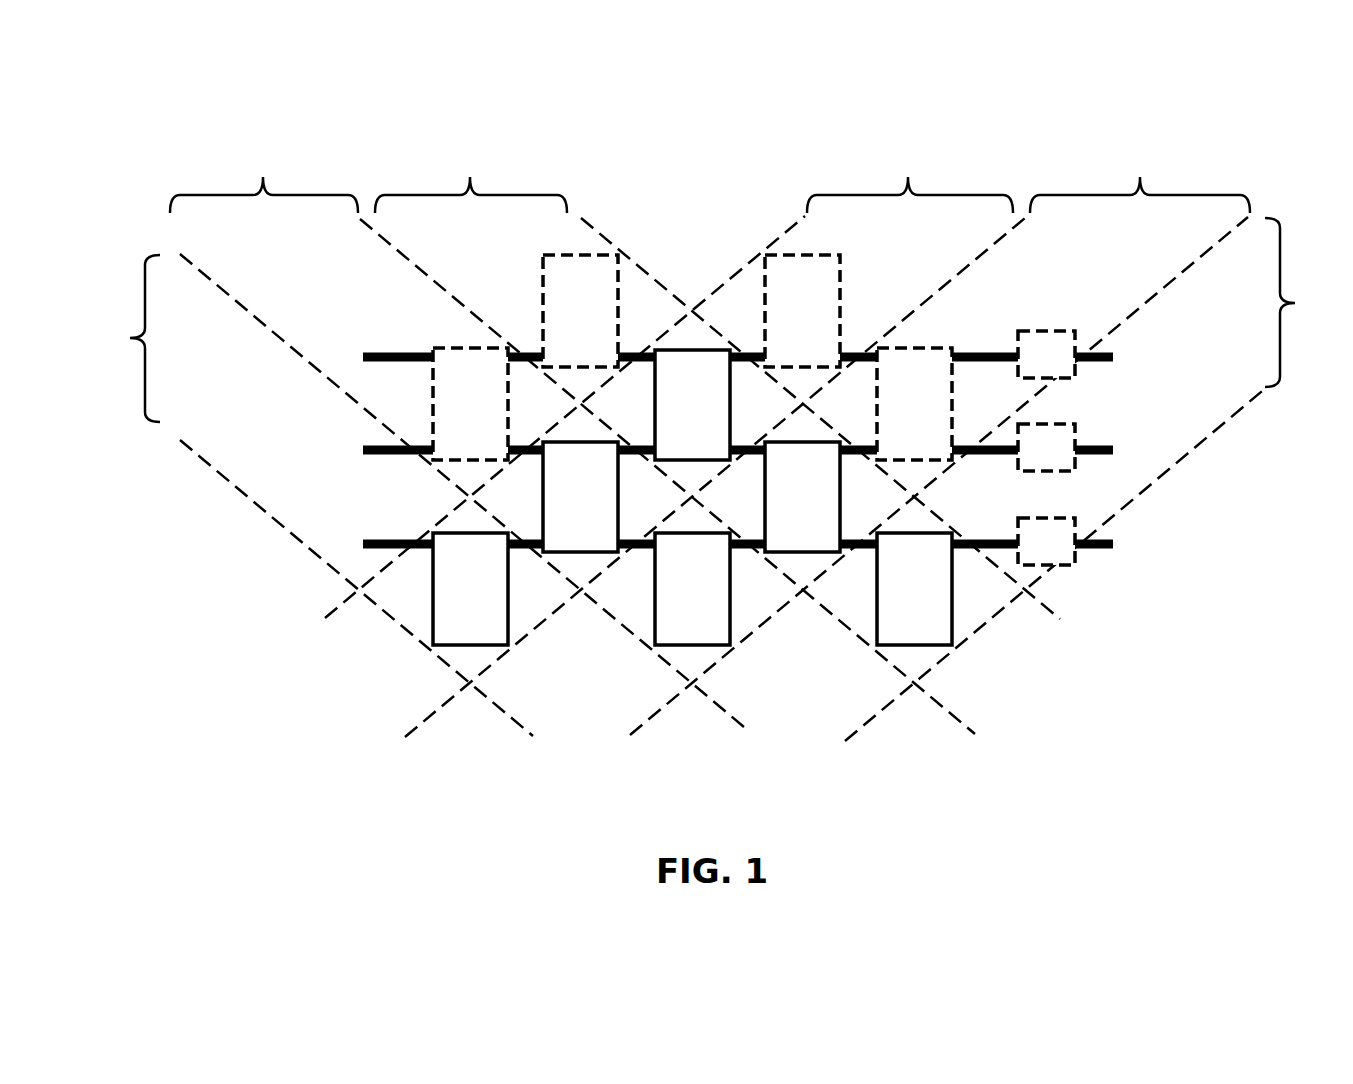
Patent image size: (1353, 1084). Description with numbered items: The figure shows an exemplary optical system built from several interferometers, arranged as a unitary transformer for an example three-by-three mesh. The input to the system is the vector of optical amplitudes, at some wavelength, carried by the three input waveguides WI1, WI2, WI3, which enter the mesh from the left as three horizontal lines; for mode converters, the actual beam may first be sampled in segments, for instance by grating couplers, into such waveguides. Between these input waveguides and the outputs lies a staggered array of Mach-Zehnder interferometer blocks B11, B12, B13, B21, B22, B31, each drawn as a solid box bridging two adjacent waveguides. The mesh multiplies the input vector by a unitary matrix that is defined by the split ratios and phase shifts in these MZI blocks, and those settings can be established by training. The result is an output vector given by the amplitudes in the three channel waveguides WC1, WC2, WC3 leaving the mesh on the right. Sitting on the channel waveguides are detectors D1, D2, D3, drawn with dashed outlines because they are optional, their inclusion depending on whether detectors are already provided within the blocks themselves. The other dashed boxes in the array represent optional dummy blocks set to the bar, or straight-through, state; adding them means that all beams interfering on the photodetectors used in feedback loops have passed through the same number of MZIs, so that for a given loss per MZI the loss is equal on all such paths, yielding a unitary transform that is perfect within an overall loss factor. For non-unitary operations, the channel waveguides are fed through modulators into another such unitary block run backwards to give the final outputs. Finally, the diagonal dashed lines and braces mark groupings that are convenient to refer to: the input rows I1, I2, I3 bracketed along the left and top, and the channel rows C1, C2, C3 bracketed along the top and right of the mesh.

The input row I1 is at (471, 173).
The input row I2 is at (264, 173).
The input row I3 is at (119, 338).
The channel row C1 is at (910, 173).
The channel row C2 is at (1140, 173).
The channel row C3 is at (1303, 302).
The input waveguide WI1 is at (377, 362).
The input waveguide WI2 is at (377, 455).
The input waveguide WI3 is at (377, 549).
The channel waveguide WC1 is at (1095, 360).
The channel waveguide WC2 is at (1095, 453).
The channel waveguide WC3 is at (1095, 547).
The MZI block B11 is at (670, 422).
The MZI block B12 is at (558, 514).
The MZI block B13 is at (448, 606).
The MZI block B21 is at (781, 514).
The MZI block B22 is at (670, 606).
The MZI block B31 is at (892, 606).
The detector D1 is at (1032, 369).
The detector D2 is at (1032, 462).
The detector D3 is at (1032, 556).